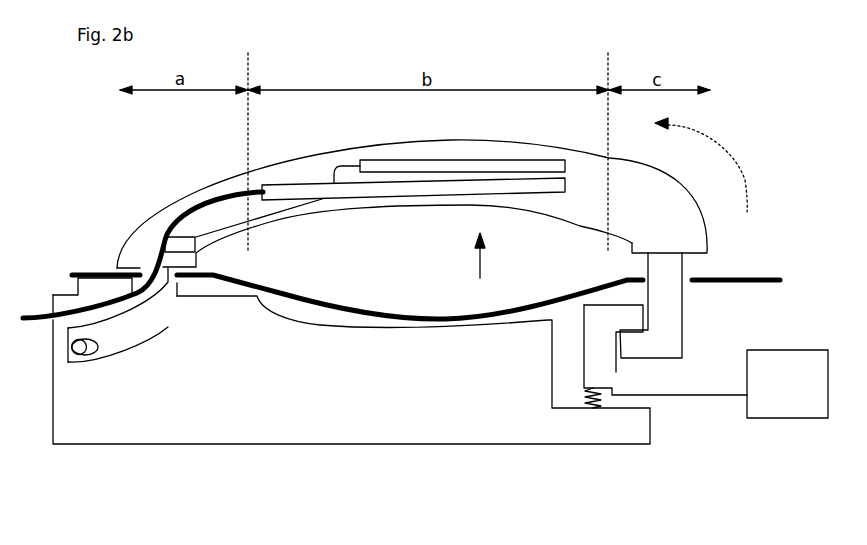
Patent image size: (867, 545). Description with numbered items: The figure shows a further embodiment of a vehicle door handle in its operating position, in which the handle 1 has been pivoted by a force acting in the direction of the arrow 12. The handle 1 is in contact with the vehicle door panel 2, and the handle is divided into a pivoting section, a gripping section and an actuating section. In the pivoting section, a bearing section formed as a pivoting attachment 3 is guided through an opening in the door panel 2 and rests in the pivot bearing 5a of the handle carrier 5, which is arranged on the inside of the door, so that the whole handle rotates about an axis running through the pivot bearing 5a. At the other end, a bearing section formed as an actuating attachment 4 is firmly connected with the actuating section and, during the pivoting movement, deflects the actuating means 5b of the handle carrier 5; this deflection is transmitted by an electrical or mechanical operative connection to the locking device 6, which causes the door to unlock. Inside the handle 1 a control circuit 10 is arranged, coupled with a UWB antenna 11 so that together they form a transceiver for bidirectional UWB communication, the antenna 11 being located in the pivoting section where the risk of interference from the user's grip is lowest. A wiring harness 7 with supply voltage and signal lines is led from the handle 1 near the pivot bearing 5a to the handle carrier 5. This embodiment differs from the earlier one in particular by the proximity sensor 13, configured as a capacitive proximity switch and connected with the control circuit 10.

The handle 1 is at (530, 141).
The vehicle door panel 2 is at (745, 280).
The pivoting attachment 3 is at (163, 335).
The actuating attachment 4 is at (683, 325).
The handle carrier 5 is at (308, 445).
The pivot bearing 5a is at (77, 355).
The actuating means 5b is at (615, 373).
The locking device 6 is at (780, 418).
The wiring harness 7 is at (69, 315).
The control circuit 10 is at (450, 198).
The UWB antenna 11 is at (176, 237).
The arrow 12 is at (480, 276).
The proximity sensor 13 is at (565, 160).